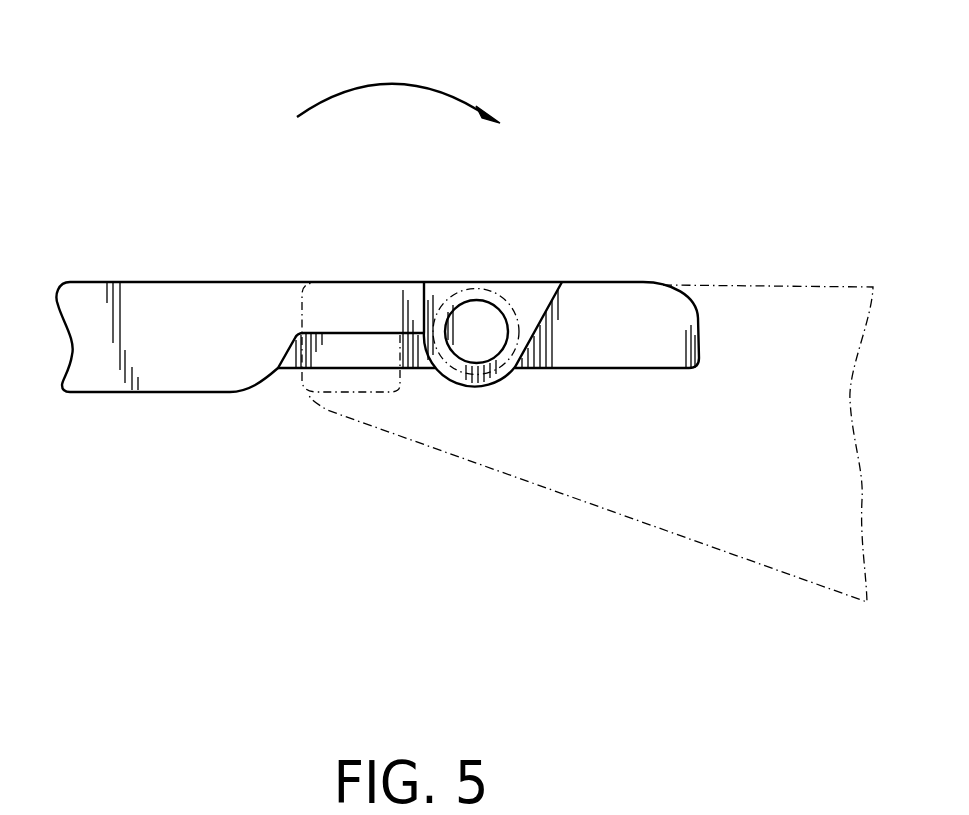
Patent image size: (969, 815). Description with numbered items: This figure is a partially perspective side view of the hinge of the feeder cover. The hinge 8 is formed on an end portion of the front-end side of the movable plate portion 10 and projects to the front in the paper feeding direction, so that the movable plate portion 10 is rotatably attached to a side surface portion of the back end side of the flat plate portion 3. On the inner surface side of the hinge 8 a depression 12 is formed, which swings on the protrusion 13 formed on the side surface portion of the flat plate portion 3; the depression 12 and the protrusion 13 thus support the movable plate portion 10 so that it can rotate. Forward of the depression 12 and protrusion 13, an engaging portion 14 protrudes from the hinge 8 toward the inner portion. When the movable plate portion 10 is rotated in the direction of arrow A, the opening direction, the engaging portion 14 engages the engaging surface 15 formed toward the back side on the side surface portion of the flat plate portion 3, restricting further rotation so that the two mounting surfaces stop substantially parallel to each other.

The arrow direction A is at (407, 83).
The flat plate portion 3 is at (170, 281).
The hinge 8 is at (627, 233).
The movable plate portion 10 is at (753, 566).
The depression 12 is at (516, 320).
The protrusion 13 is at (459, 294).
The engaging portion 14 is at (363, 393).
The engaging surface 15 is at (322, 336).